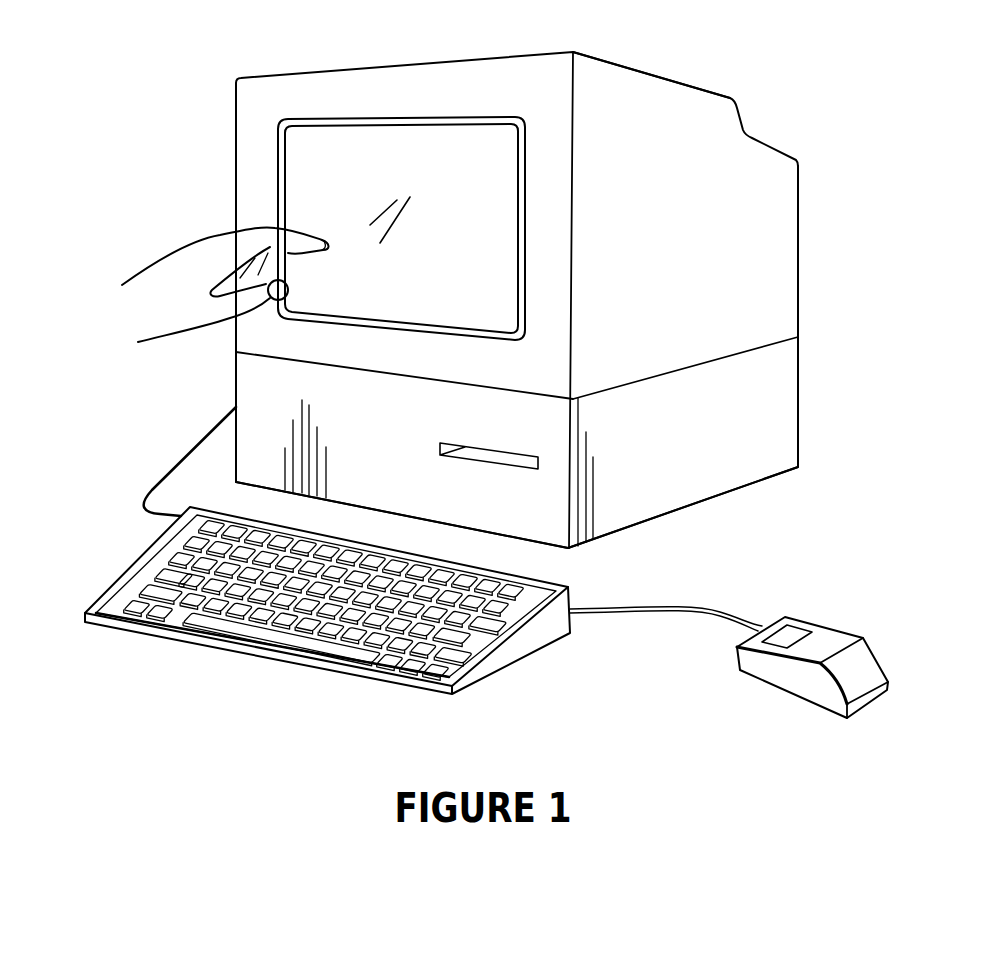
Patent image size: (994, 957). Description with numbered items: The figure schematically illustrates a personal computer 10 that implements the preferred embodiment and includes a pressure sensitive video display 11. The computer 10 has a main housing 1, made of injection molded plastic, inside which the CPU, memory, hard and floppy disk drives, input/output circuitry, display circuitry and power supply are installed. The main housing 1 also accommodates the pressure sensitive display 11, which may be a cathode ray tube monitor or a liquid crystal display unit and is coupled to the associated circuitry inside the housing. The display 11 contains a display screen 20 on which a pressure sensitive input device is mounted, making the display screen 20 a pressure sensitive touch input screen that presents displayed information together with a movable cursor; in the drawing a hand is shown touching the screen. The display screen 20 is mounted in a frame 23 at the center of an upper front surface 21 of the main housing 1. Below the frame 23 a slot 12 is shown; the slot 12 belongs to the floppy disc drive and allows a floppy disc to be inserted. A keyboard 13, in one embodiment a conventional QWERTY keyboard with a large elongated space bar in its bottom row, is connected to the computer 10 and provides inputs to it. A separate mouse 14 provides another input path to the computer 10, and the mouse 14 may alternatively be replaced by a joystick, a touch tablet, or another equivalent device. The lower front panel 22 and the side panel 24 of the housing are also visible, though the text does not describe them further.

The main housing 1 is at (655, 76).
The personal computer 10 is at (766, 63).
The pressure sensitive video display 11 is at (415, 118).
The slot 12 is at (515, 462).
The keyboard 13 is at (525, 660).
The mouse 14 is at (838, 630).
The display screen 20 is at (440, 206).
The upper front surface 21 is at (236, 122).
The lower front panel 22 is at (236, 385).
The frame 23 is at (517, 101).
The side panel 24 is at (798, 268).